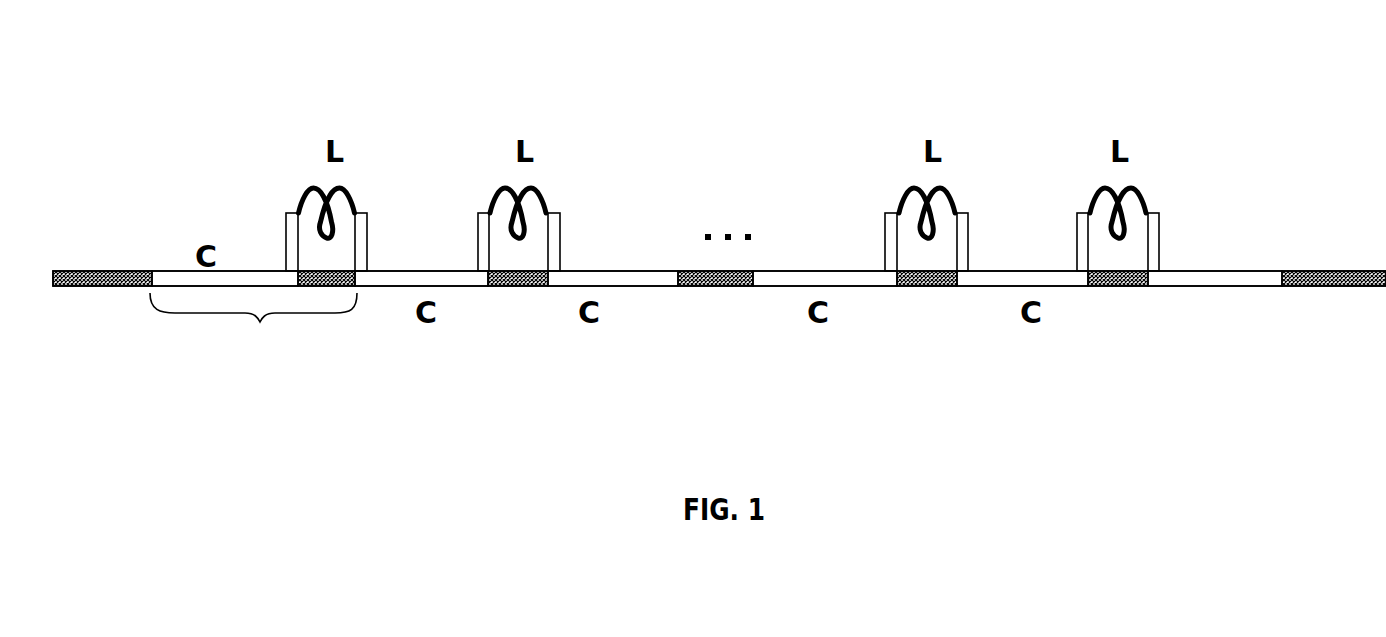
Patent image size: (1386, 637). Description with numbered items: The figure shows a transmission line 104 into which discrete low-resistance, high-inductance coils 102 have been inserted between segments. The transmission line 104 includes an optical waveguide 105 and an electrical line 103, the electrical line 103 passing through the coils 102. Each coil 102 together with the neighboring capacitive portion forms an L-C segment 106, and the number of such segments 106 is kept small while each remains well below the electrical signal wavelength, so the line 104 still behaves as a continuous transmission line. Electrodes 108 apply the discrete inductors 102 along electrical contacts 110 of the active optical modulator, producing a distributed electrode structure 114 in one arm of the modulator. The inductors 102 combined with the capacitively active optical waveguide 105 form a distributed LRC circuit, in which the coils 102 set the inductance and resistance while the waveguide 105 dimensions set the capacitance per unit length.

The coil 102 is at (350, 200).
The electrical line 103 is at (412, 270).
The transmission line 104 is at (755, 27).
The optical waveguide 105 is at (105, 287).
The L-C segment 106 is at (260, 322).
The electrode 108 is at (286, 225).
The electrical contact 110 is at (183, 271).
The distributed electrode structure 114 is at (1301, 243).